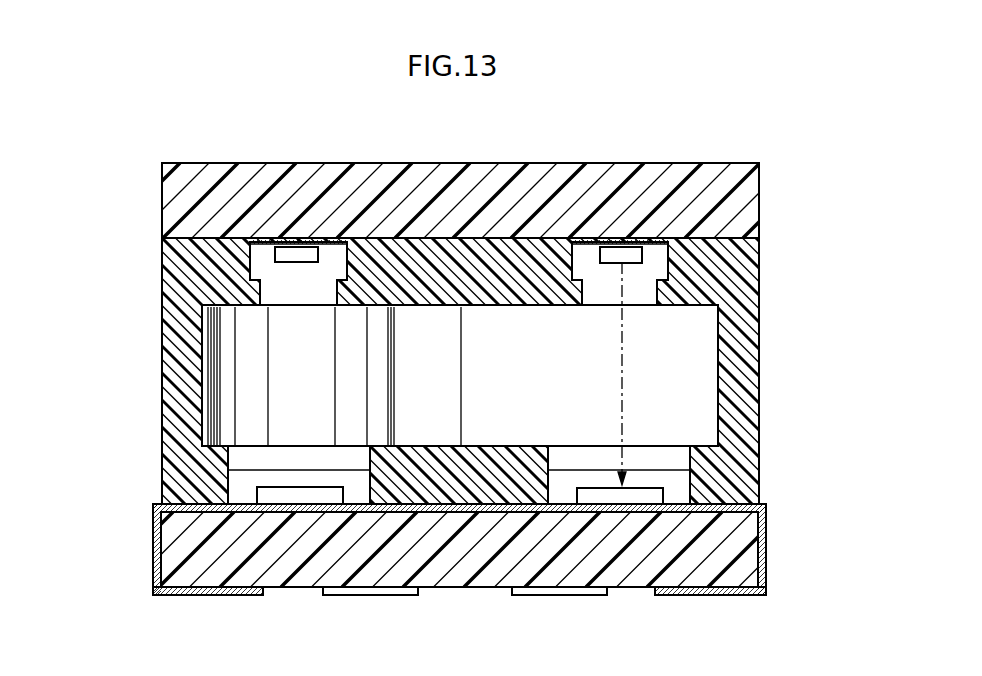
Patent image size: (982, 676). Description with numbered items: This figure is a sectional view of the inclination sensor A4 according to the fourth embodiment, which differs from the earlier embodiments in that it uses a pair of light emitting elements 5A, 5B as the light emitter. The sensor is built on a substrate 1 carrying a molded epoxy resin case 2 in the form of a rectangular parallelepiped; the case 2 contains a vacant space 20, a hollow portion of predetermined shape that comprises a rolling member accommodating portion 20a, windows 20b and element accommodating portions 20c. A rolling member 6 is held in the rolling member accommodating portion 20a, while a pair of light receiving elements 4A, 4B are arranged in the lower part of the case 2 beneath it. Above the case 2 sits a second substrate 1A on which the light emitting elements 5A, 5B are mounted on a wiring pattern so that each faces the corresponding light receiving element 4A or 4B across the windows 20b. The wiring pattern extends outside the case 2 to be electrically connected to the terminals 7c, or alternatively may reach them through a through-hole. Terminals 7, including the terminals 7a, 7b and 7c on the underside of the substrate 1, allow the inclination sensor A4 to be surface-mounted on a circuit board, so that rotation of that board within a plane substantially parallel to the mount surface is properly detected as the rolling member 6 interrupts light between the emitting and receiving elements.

The inclination sensor A4 is at (126, 167).
The substrate 1 is at (742, 545).
The substrate 1A is at (742, 205).
The case 2 is at (750, 398).
The light receiving element 4A is at (308, 497).
The light receiving element 4B is at (613, 497).
The light emitting element 5A is at (300, 255).
The light emitting element 5B is at (627, 255).
The rolling member 6 is at (247, 318).
The terminals 7 is at (167, 508).
The terminal 7a is at (218, 593).
The terminal 7b is at (708, 595).
The terminal 7c is at (380, 595).
The vacant space 20 is at (60, 313).
The rolling member accommodating portion 20a is at (205, 338).
The window 20b is at (205, 447).
The element accommodating portion 20c is at (205, 485).